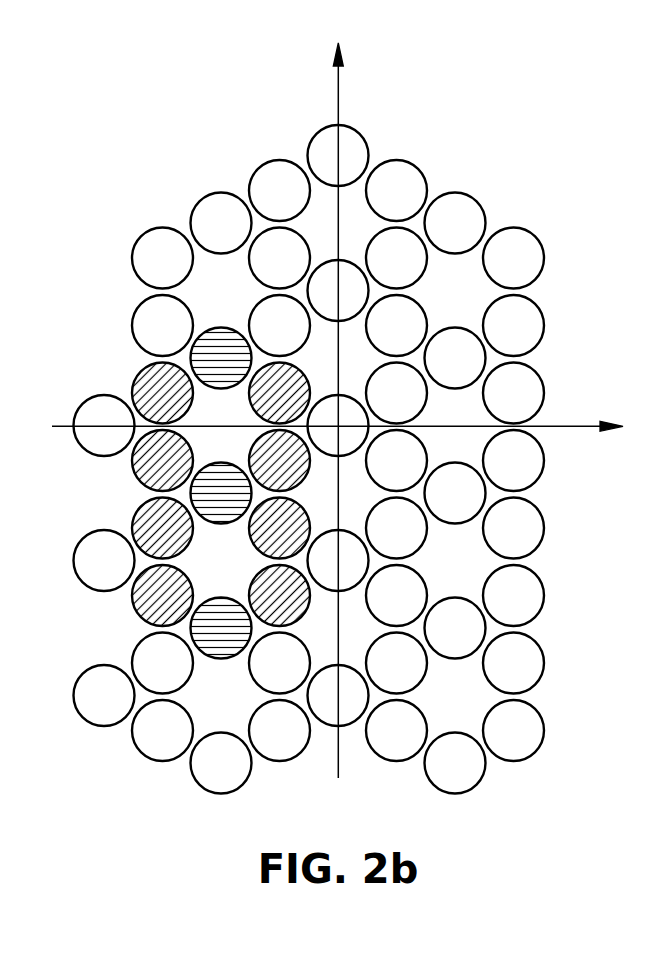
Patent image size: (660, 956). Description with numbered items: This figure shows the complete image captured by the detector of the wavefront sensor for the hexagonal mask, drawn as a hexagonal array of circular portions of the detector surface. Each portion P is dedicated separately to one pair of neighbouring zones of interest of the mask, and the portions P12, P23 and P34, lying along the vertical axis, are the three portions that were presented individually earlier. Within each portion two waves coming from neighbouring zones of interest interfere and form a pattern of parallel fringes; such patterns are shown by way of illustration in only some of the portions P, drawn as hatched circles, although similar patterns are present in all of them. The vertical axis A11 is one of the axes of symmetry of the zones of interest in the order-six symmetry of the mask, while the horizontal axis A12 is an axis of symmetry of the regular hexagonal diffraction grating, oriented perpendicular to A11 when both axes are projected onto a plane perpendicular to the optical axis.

The portion of the detector surface P is at (94, 707).
The portion P34 of the detector surface P34 is at (358, 308).
The portion P23 of the detector surface P23 is at (358, 442).
The portion P12 of the detector surface P12 is at (358, 578).
The axis of symmetry of the mask A11 is at (340, 78).
The axis of symmetry of the diffraction grating A12 is at (587, 423).